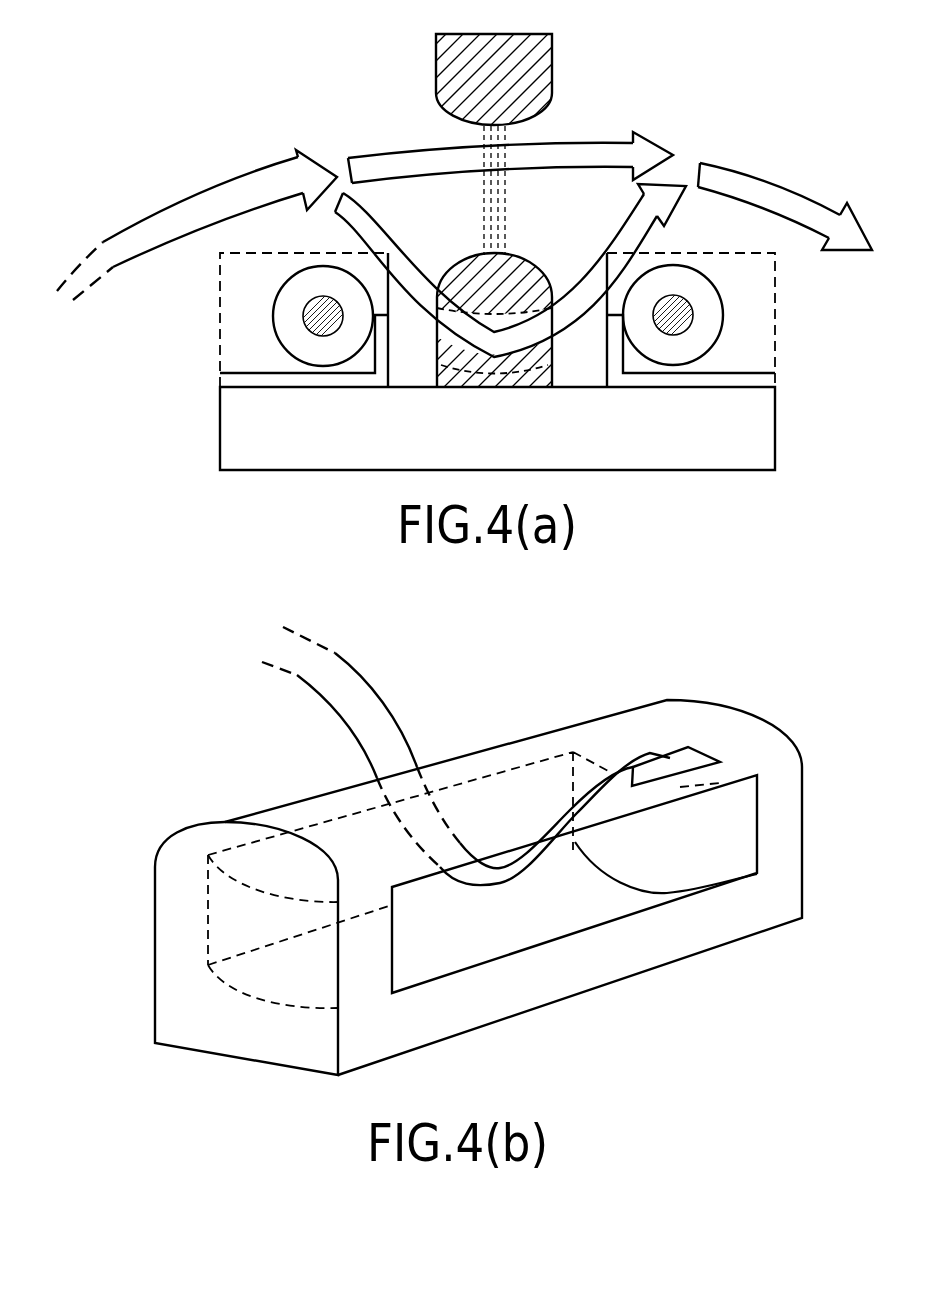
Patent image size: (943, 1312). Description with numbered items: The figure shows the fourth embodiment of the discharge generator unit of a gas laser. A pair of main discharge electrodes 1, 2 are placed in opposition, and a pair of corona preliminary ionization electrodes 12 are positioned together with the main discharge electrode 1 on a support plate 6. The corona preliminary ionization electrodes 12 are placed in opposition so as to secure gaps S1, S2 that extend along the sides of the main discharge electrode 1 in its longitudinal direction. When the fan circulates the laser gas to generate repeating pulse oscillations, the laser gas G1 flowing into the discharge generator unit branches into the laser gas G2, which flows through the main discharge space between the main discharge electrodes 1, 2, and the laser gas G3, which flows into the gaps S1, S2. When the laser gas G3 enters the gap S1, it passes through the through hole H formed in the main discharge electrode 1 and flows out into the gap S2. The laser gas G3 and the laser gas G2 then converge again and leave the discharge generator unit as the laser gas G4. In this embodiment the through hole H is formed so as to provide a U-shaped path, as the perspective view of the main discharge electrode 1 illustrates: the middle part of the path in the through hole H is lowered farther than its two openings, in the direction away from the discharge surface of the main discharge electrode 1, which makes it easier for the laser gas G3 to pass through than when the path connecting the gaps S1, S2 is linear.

In FIG. 4A, the main discharge electrode 1 is at (477, 283).
In FIG. 4B, the main discharge electrode 1 is at (258, 1040).
In FIG. 4A, the main discharge electrode 2 is at (530, 70).
In FIG. 4A, the support plate 6 is at (757, 433).
In FIG. 4A, the corona preliminary ionization electrodes 12 is at (220, 317).
In FIG. 4A, the through hole H is at (553, 310).
In FIG. 4B, the through hole H is at (512, 923).
In FIG. 4A, the gap S1 is at (413, 365).
In FIG. 4A, the gap S2 is at (578, 372).
In FIG. 4A, the laser gas G1 is at (202, 208).
In FIG. 4A, the laser gas G2 is at (375, 167).
In FIG. 4A, the laser gas G3 is at (367, 218).
In FIG. 4B, the laser gas G3 is at (358, 695).
In FIG. 4A, the laser gas G4 is at (852, 223).